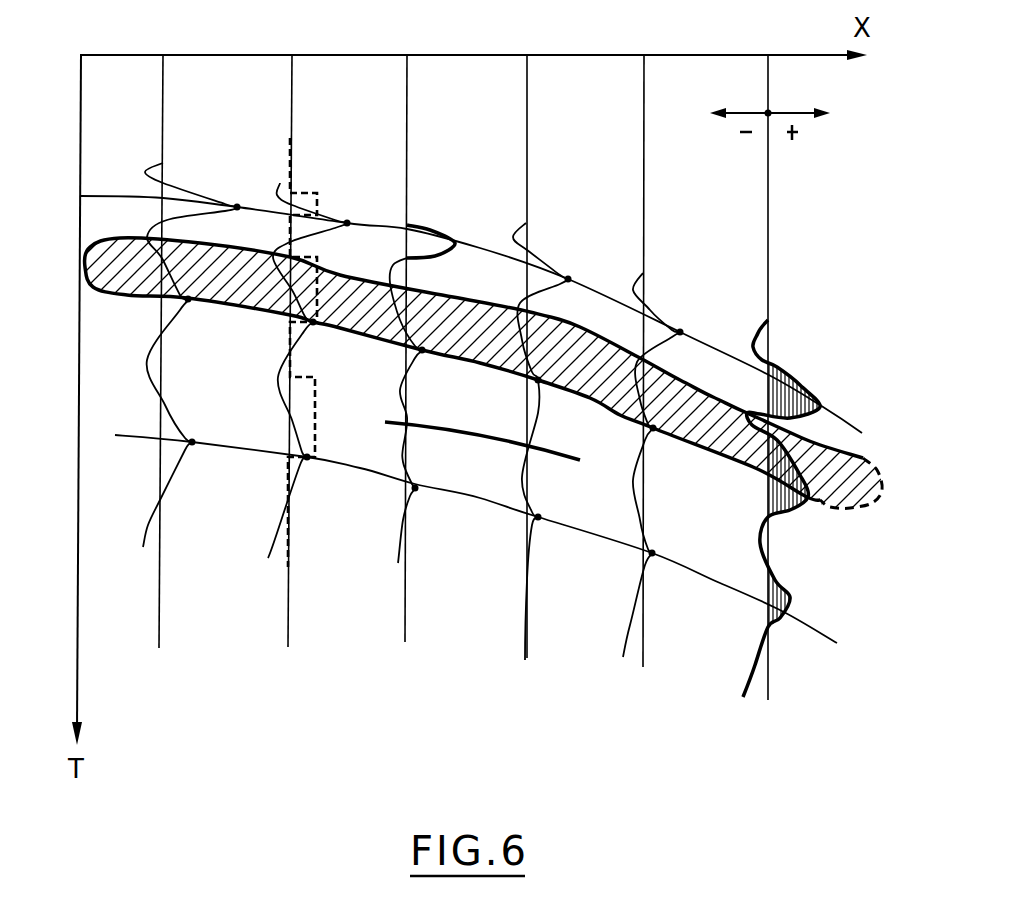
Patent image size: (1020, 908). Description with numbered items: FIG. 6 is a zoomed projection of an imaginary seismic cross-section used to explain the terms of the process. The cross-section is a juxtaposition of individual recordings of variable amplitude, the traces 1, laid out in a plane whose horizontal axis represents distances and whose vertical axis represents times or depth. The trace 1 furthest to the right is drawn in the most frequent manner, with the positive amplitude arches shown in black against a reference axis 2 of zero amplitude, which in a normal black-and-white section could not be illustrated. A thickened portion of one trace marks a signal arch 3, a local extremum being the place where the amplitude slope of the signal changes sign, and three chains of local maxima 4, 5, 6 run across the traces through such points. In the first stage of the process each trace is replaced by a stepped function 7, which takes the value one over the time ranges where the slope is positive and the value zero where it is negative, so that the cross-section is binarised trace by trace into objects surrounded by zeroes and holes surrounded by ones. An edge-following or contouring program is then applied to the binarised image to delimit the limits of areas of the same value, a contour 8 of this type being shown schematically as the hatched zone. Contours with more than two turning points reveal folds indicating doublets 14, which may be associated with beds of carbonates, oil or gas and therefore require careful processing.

The trace 1 is at (795, 373).
The reference axis 2 is at (770, 190).
The seismic event 3 is at (440, 233).
The chain of local maxima 4 is at (490, 326).
The chain of local maxima 5 is at (863, 503).
The chain of local maxima 6 is at (497, 550).
The stepped function 7 is at (292, 142).
The contour 8 is at (727, 445).
The doublet 14 is at (553, 450).